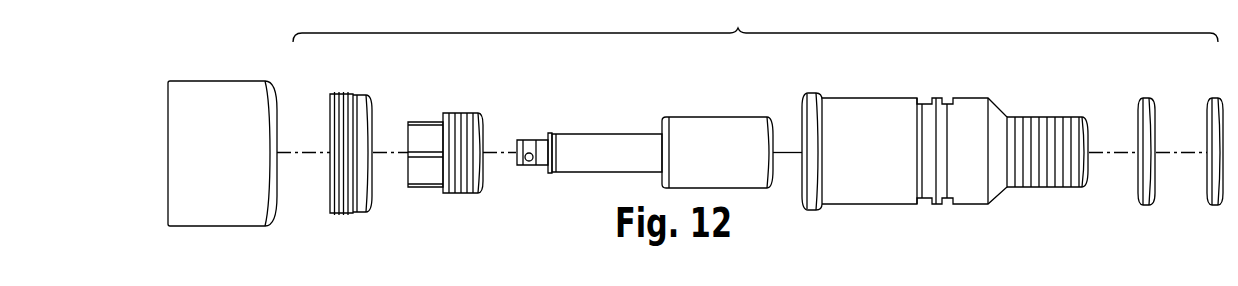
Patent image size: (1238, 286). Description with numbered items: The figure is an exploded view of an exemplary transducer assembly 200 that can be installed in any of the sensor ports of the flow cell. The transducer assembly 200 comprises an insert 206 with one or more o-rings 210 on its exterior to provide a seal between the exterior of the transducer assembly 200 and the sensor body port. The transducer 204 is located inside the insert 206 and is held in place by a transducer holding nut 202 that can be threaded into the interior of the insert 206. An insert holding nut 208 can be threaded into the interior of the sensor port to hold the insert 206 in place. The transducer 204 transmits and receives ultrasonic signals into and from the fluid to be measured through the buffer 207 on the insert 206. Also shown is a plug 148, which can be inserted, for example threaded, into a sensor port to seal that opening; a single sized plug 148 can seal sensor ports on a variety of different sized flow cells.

The transducer assembly 200 is at (755, 23).
The plug 148 is at (218, 97).
The insert holding nut 208 is at (353, 102).
The transducer holding nut 202 is at (425, 133).
The transducer 204 is at (622, 142).
The insert 206 is at (875, 118).
The buffer 207 is at (1037, 132).
The o-rings 210 is at (1213, 108).